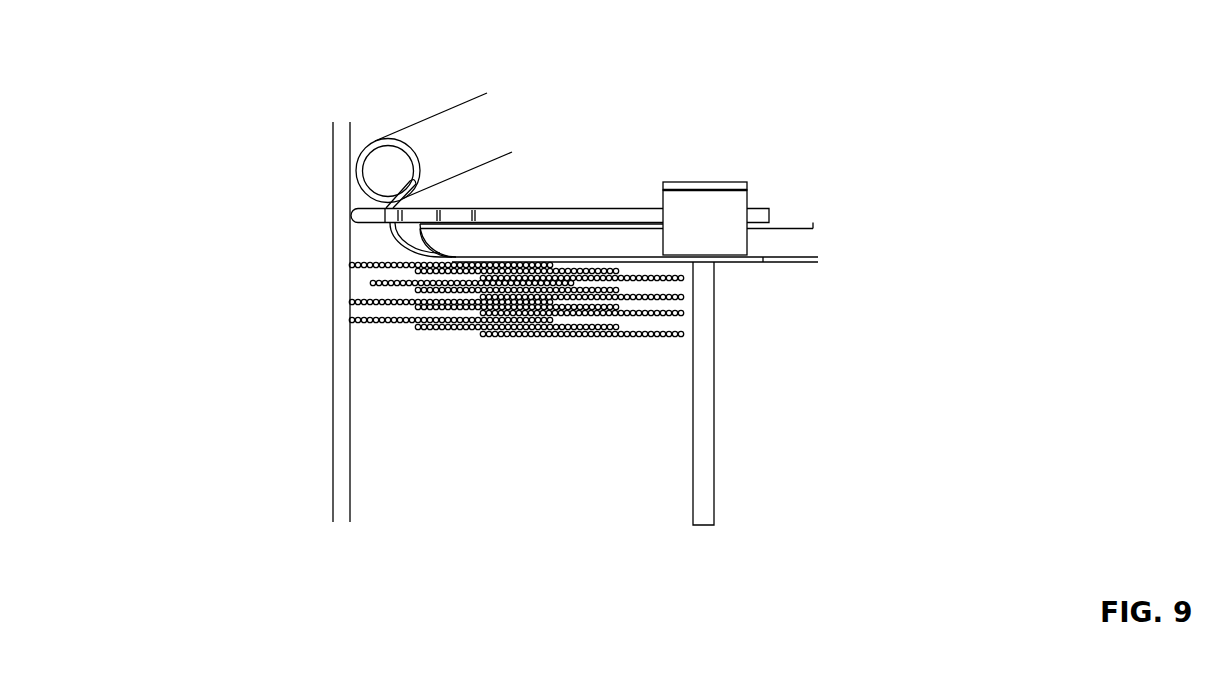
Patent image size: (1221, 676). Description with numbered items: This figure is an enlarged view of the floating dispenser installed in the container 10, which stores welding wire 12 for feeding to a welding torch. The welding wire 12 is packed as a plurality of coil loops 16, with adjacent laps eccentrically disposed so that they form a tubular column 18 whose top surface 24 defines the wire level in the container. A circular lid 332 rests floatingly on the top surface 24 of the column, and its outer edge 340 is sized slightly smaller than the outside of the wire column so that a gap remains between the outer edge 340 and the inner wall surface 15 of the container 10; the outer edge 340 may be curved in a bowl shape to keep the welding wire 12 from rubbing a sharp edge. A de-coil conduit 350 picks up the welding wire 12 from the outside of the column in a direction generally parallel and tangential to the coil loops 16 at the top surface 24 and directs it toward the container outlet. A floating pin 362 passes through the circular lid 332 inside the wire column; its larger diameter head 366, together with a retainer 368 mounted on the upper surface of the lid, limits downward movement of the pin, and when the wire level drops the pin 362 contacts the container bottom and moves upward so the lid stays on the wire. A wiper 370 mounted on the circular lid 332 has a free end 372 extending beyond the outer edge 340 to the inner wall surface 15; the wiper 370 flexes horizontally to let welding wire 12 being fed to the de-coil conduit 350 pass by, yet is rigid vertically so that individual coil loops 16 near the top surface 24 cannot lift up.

The container 10 is at (281, 322).
The welding wire 12 is at (388, 192).
The inner wall surface 15 is at (352, 364).
The coil loops 16 is at (615, 338).
The tubular column 18 is at (517, 340).
The top surface 24 is at (368, 266).
The circular lid 332 is at (450, 252).
The outer edge 340 is at (430, 232).
The de-coil conduit 350 is at (418, 142).
The floating pins 362 is at (707, 480).
The head 366 is at (690, 183).
The retainer 368 is at (733, 240).
The wipers 370 is at (585, 209).
The free end 372 is at (353, 216).